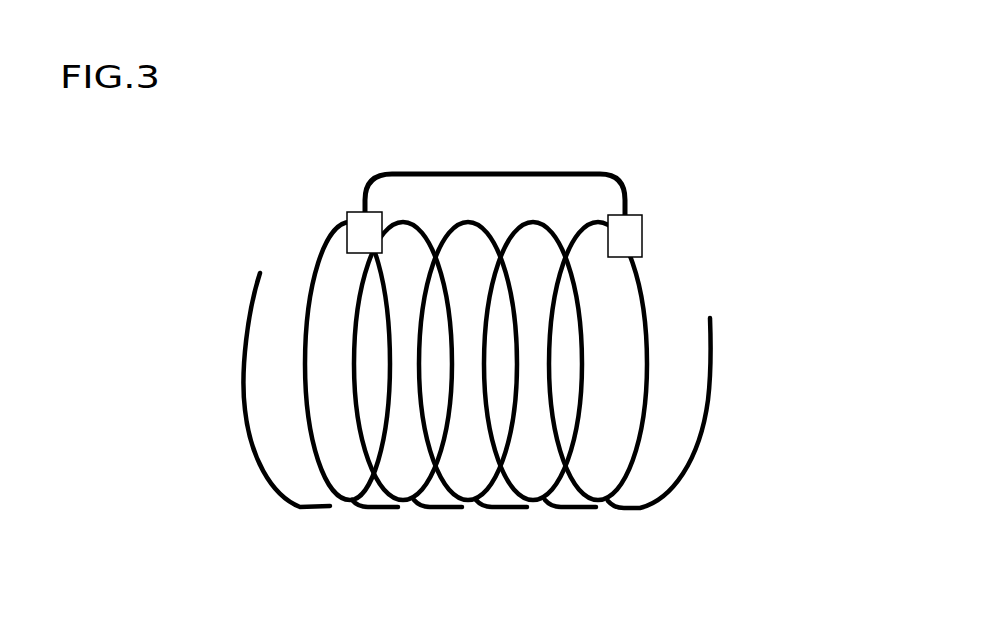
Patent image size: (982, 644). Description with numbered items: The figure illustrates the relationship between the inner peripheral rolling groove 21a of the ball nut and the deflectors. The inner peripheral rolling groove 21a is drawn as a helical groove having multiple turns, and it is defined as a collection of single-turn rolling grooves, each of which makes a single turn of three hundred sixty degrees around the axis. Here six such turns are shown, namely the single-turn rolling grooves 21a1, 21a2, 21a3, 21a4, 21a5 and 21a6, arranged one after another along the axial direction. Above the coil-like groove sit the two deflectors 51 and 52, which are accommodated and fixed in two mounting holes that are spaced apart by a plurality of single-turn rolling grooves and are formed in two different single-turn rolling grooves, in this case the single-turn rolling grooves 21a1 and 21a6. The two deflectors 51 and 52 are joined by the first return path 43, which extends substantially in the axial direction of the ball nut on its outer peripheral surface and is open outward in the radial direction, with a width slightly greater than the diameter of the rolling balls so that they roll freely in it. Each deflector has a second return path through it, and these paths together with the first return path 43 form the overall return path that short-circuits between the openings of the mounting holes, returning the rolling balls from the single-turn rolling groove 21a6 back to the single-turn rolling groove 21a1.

The inner peripheral rolling groove 21a is at (509, 405).
The single-turn rolling groove 21a1 is at (298, 512).
The single-turn rolling groove 21a2 is at (370, 510).
The single-turn rolling groove 21a3 is at (435, 512).
The single-turn rolling groove 21a4 is at (502, 512).
The single-turn rolling groove 21a5 is at (576, 512).
The single-turn rolling groove 21a6 is at (635, 512).
The first return path 43 is at (484, 172).
The deflector 51 is at (642, 222).
The deflector 52 is at (348, 222).